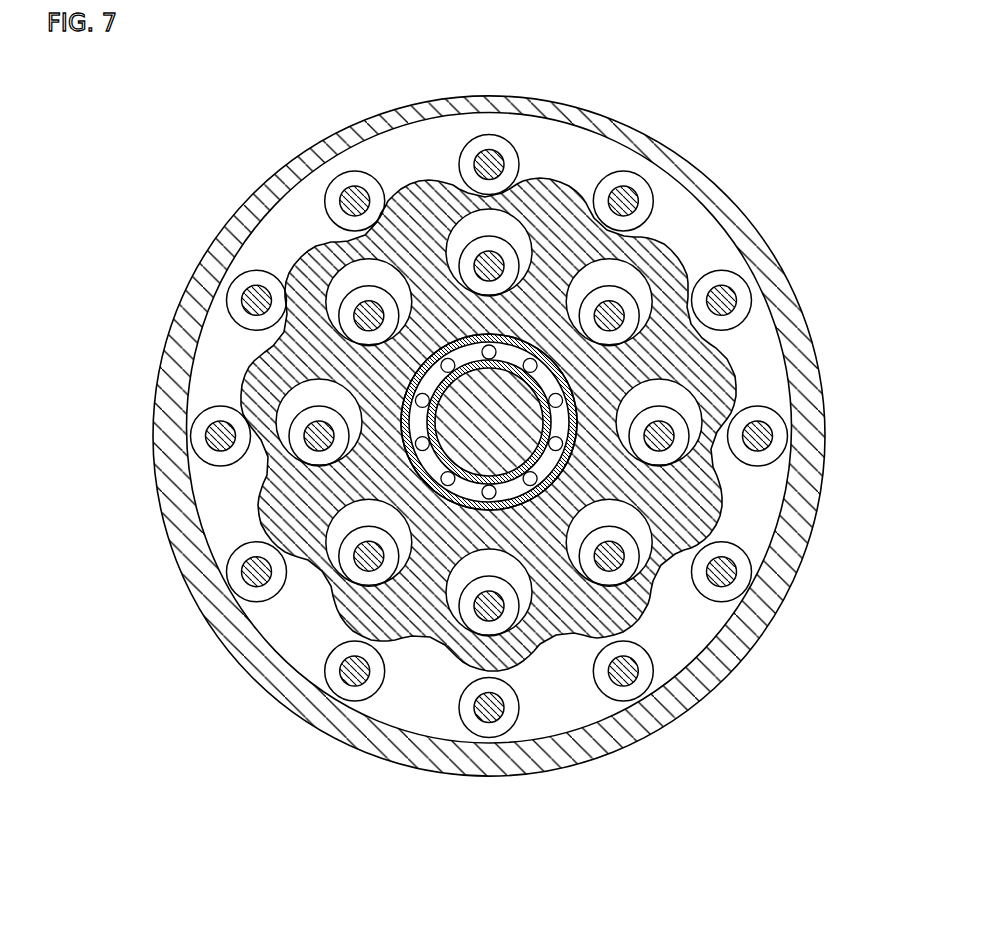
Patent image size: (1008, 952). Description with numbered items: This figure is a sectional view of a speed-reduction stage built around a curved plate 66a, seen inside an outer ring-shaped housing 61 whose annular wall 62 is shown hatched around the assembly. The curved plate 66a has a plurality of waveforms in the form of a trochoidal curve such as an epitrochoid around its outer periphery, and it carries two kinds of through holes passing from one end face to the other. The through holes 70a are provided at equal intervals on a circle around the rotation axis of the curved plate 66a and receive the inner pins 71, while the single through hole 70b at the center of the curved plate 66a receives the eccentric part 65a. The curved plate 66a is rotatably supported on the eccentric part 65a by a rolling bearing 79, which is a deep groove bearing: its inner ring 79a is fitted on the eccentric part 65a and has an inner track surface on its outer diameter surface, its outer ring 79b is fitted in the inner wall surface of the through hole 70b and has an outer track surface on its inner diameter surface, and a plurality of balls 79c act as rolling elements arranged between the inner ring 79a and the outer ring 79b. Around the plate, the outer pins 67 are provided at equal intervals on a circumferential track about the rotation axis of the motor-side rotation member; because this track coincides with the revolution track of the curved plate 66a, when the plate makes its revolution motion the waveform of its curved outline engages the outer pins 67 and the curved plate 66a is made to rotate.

The reduction gear unit 61 is at (275, 174).
The outer cylinder (casing) 62 is at (237, 232).
The eccentric part 65a is at (468, 448).
The curved plate 66a is at (663, 257).
The outer pins 67 is at (357, 195).
The through holes 70a is at (693, 400).
The through hole 70b is at (542, 469).
The inner pins 71 is at (497, 258).
The rolling bearing 79 is at (453, 508).
The inner ring 79a is at (428, 412).
The outer ring 79b is at (455, 345).
The balls 79c is at (445, 364).